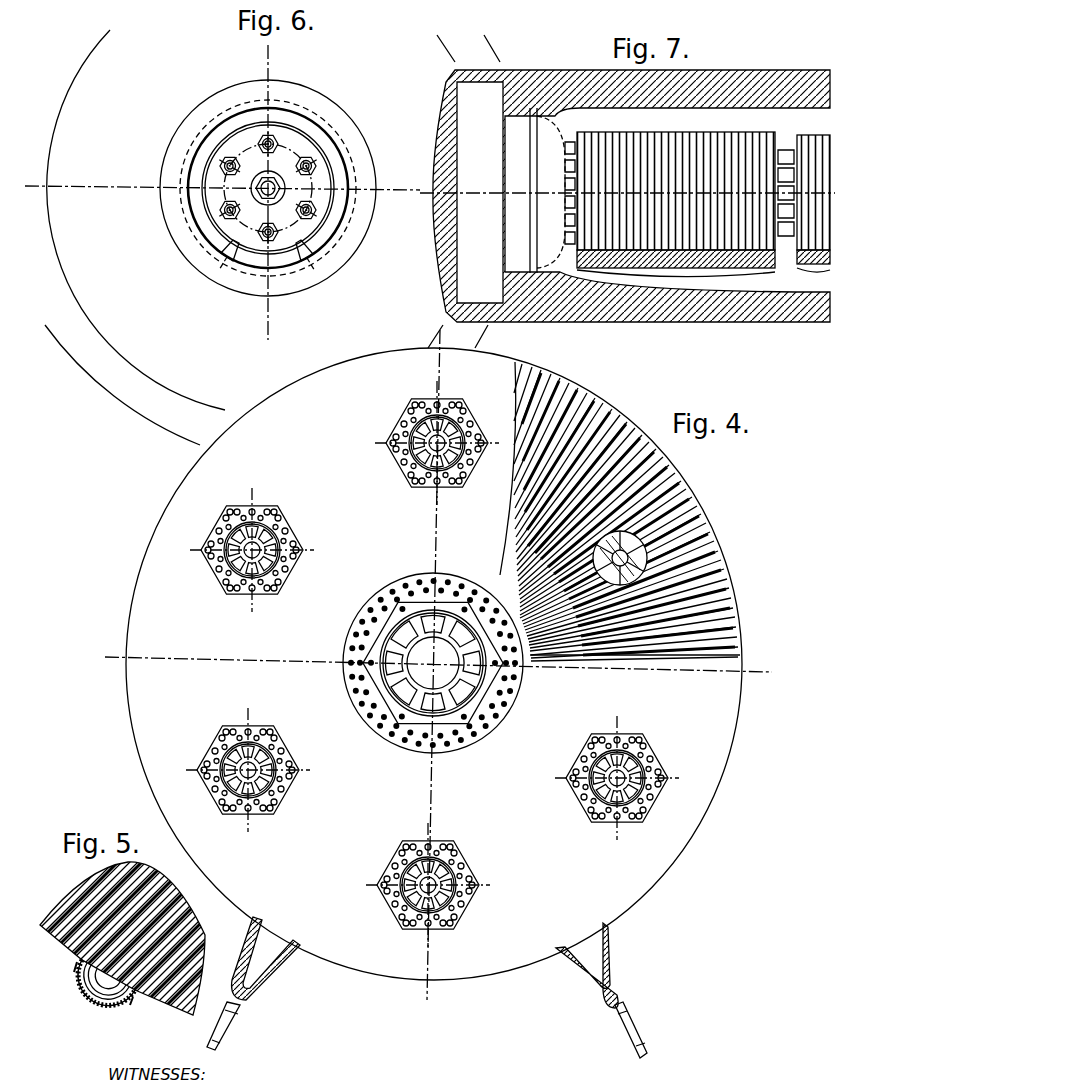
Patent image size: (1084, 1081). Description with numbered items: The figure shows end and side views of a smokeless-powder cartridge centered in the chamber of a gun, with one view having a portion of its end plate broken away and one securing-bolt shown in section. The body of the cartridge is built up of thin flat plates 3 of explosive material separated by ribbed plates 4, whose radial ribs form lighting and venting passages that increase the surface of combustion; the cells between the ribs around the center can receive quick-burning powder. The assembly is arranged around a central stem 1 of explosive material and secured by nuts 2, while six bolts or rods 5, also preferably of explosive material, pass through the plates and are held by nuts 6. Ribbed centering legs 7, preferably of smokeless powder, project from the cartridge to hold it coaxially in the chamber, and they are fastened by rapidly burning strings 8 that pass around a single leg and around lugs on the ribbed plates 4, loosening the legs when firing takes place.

In FIG. 4, the central stem 1 is at (410, 643).
In FIG. 4, the nut 2 is at (478, 725).
In FIG. 4, the flat plate 3 is at (434, 664).
In FIG. 4, the ribbed plate 4 is at (705, 556).
In FIG. 4, the rod 5 is at (455, 895).
In FIG. 6, the nut 6 is at (280, 140).
In FIG. 4, the nut 6 is at (448, 845).
In FIG. 6, the centering leg 7 is at (310, 247).
In FIG. 4, the centering leg 7 is at (625, 1012).
In FIG. 4, the string 8 is at (612, 946).
In FIG. 5, the string 8 is at (77, 962).